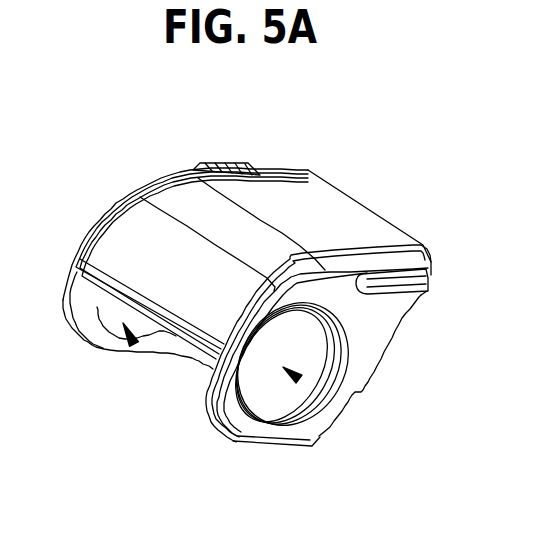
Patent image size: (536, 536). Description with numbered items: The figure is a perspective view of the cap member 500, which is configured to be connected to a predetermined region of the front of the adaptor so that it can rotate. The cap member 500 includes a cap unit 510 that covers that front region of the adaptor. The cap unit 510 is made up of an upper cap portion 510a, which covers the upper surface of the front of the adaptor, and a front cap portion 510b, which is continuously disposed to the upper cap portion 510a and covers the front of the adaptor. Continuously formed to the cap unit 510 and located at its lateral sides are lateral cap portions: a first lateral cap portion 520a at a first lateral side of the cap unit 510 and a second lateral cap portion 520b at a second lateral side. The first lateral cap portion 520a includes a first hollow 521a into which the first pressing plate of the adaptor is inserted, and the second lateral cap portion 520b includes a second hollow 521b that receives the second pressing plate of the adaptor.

The cap member 500 is at (373, 131).
The cap unit 510 is at (60, 152).
The upper cap portion 510a is at (293, 183).
The front cap portion 510b is at (117, 243).
The first lateral cap portion 520a is at (237, 443).
The second lateral cap portion 520b is at (88, 350).
The first hollow 521a is at (299, 379).
The second hollow 521b is at (134, 344).